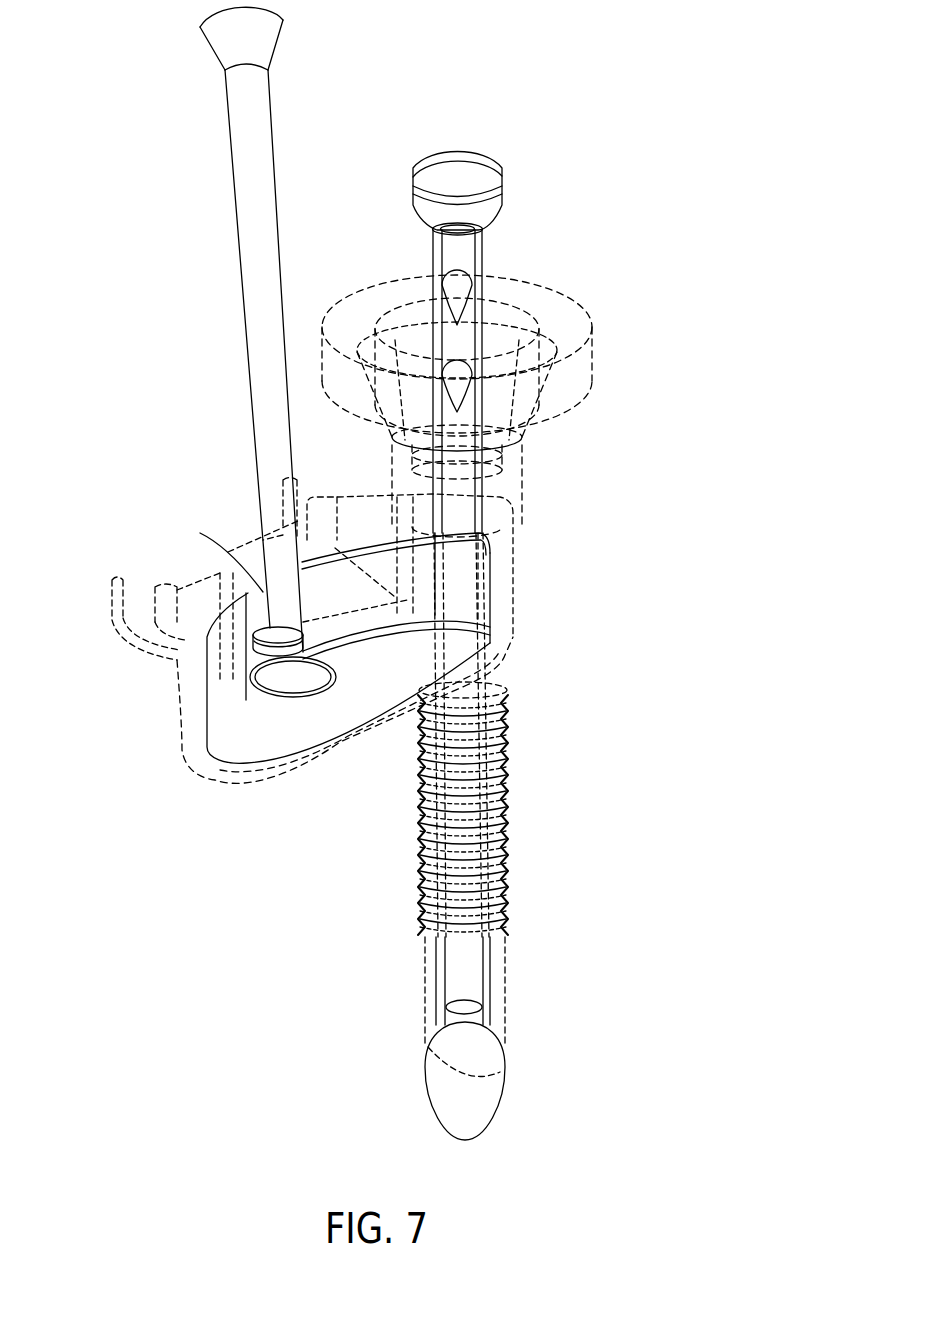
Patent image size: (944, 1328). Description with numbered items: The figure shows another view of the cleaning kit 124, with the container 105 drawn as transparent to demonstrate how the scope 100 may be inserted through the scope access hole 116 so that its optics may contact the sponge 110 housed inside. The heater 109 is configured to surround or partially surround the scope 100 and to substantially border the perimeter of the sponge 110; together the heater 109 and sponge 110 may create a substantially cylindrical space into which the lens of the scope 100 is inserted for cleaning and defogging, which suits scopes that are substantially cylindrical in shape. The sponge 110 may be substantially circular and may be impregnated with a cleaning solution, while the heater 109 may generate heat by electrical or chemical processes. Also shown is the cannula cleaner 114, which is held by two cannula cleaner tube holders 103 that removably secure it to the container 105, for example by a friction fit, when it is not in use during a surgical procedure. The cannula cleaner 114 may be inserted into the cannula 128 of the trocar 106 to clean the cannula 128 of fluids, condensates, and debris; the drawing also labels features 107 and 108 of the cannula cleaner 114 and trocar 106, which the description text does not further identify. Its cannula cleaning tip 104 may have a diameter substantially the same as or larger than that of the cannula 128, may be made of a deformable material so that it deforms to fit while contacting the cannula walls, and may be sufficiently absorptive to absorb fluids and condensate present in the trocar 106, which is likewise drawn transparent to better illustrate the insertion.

The surgical viewing device 100 is at (252, 323).
The cannula cleaner tube holders 103 is at (297, 497).
The cannula cleaning tip 104 is at (497, 1108).
The container 105 is at (365, 755).
The trocar 106 is at (577, 407).
The bore 107 is at (462, 347).
The knob 108 is at (488, 155).
The heater 109 is at (215, 750).
The sponge 110 is at (287, 677).
The cannula cleaner 114 is at (542, 243).
The scope access hole 116 is at (263, 590).
The cleaning kit 124 is at (145, 703).
The cannula 128 is at (500, 400).